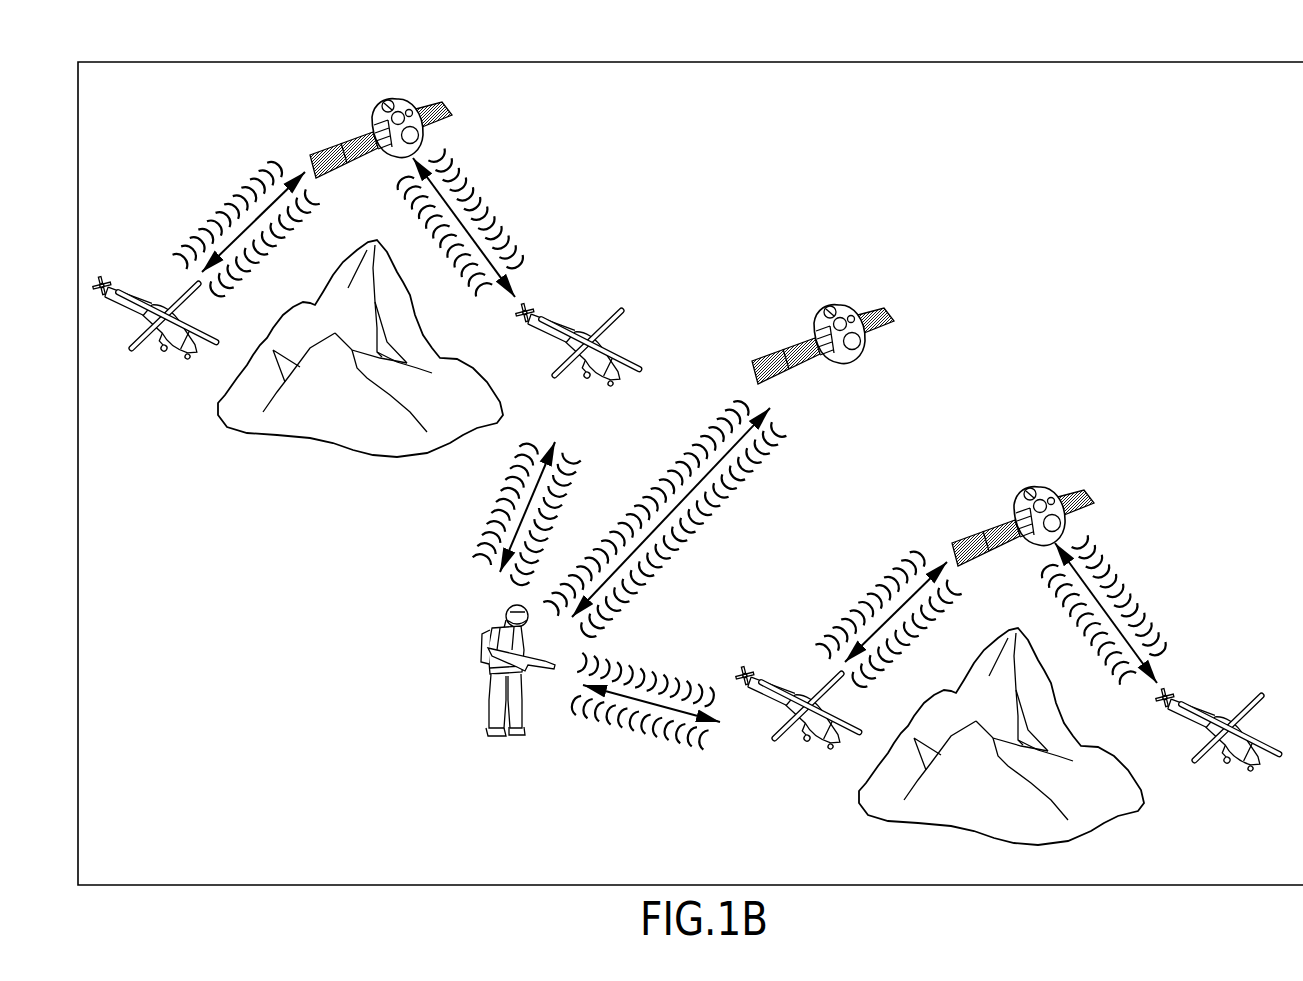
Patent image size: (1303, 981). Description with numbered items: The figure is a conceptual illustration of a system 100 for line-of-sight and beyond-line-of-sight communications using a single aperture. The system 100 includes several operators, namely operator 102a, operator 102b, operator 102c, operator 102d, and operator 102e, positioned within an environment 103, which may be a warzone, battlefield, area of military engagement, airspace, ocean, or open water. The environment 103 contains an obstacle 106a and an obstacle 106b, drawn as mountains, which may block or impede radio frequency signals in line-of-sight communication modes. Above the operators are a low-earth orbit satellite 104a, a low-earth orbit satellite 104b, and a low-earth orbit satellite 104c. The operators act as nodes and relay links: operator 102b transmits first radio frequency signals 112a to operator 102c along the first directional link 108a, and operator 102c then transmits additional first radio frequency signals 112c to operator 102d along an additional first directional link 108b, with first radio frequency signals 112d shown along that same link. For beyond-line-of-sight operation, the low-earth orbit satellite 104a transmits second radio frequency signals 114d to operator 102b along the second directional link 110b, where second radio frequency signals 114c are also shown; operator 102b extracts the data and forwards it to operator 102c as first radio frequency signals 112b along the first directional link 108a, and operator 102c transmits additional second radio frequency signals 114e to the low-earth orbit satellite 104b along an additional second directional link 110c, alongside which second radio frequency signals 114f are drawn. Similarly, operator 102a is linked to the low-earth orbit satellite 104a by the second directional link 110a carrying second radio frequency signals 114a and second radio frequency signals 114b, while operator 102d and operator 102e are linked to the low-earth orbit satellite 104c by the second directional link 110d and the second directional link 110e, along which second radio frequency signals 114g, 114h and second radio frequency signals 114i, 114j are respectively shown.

The system 100 is at (168, 48).
The operator 102a is at (168, 364).
The operator 102b is at (622, 338).
The operator 102c is at (470, 632).
The operator 102d is at (812, 747).
The operator 102e is at (1240, 785).
The environment 103 is at (1124, 376).
The low-earth orbit satellite 104a is at (458, 100).
The low-earth orbit satellite 104b is at (895, 300).
The low-earth orbit satellite 104c is at (1100, 490).
The obstacle 106a is at (335, 460).
The obstacle 106b is at (975, 848).
The first directional link 108a is at (490, 514).
The additional first directional link 108b is at (627, 721).
The second directional link 110a is at (252, 207).
The second directional link 110b is at (465, 209).
The additional second directional link 110c is at (664, 518).
The second directional link 110d is at (892, 596).
The second directional link 110e is at (1108, 597).
The first radio frequency signals 112a is at (488, 498).
The first radio frequency signals 112b is at (572, 506).
The additional first radio frequency signals 112c is at (651, 663).
The first radio frequency signals 112d is at (641, 743).
The second radio frequency signals 114a is at (218, 205).
The second radio frequency signals 114b is at (293, 238).
The second radio frequency signals 114c is at (410, 213).
The second radio frequency signals 114d is at (520, 238).
The additional second radio frequency signals 114e is at (705, 423).
The second radio frequency signals 114f is at (702, 533).
The second radio frequency signals 114g is at (862, 590).
The second radio frequency signals 114h is at (935, 625).
The second radio frequency signals 114i is at (1061, 600).
The second radio frequency signals 114j is at (1163, 625).